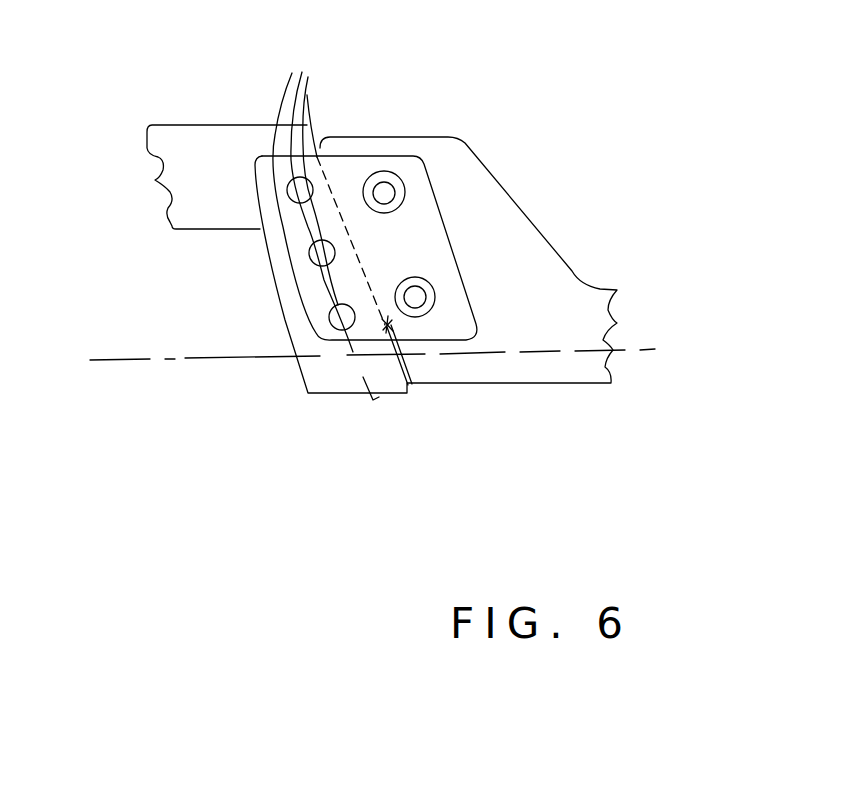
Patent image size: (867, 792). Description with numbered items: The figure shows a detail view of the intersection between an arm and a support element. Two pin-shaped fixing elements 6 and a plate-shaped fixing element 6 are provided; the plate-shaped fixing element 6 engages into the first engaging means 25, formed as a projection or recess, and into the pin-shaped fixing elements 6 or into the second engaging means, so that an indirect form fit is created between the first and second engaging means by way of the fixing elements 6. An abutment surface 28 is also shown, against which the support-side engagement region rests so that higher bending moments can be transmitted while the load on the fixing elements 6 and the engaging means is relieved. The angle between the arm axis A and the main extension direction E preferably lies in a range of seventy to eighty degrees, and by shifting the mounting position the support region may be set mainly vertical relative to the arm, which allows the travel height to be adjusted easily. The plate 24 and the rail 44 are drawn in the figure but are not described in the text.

The holes 6 is at (386, 188).
The plate 24 is at (328, 345).
The strip 25 is at (285, 147).
The twisted end portion of strip 28 is at (388, 328).
The rail 44 is at (510, 250).
The axis A is at (197, 362).
The edge E is at (383, 437).